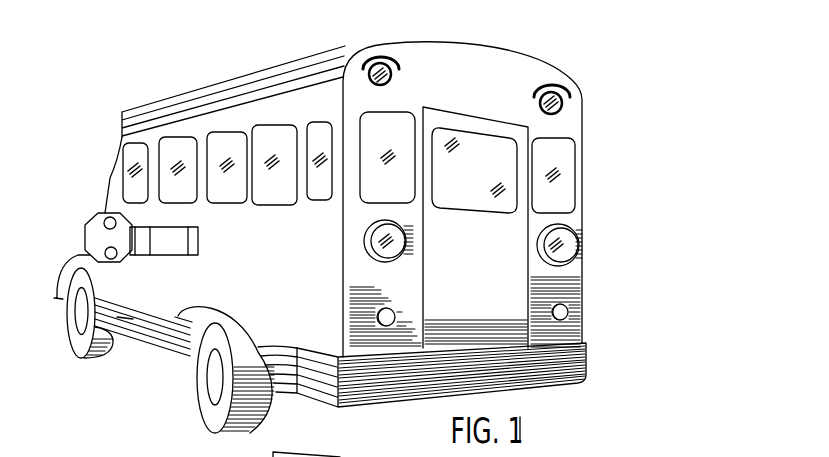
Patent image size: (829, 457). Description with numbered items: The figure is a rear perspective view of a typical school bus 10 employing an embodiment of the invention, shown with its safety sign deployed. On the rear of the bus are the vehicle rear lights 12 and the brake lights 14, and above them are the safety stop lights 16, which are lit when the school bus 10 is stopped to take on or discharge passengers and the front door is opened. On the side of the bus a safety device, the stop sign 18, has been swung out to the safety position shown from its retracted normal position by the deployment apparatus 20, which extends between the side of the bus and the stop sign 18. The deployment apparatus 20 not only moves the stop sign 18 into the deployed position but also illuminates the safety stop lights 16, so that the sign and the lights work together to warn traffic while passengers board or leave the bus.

The school bus 10 is at (600, 198).
The vehicle rear lights 12 is at (390, 308).
The brake lights 14 is at (388, 222).
The safety stop lights 16 is at (367, 82).
The stop sign 18 is at (97, 222).
The deployment apparatus 20 is at (175, 246).